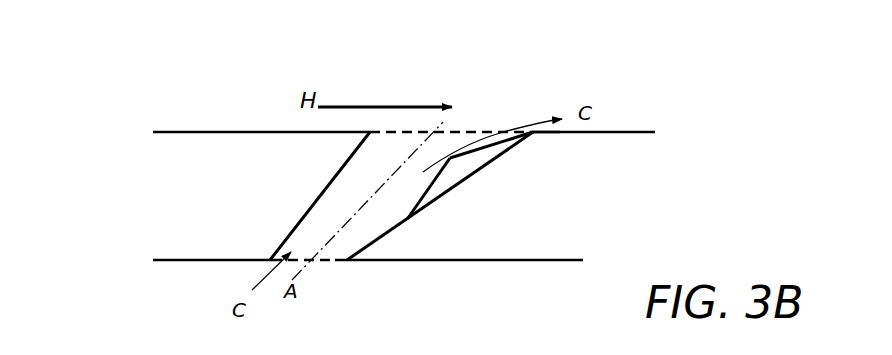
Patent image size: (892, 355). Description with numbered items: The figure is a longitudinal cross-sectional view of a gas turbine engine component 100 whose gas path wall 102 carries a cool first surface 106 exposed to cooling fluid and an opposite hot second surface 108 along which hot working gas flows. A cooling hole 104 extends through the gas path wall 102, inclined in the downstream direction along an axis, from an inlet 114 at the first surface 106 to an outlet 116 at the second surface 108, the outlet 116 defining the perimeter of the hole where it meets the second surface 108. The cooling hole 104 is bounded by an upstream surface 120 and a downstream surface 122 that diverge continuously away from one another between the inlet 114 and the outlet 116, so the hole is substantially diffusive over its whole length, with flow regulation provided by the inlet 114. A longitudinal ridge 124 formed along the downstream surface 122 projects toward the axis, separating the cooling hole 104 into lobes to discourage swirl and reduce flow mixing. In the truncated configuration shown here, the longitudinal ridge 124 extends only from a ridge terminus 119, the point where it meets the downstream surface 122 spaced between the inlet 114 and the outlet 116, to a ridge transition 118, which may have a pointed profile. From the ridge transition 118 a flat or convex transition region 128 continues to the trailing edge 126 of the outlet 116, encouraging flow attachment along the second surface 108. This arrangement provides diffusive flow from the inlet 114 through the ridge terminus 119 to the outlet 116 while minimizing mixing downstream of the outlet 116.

The gas turbine engine component 100 is at (96, 78).
The gas path wall 102 is at (222, 179).
The cooling hole 104 is at (407, 196).
The first surface 106 is at (503, 261).
The second surface 108 is at (245, 131).
The inlet 114 is at (325, 263).
The outlet 116 is at (463, 132).
The ridge transition 118 is at (452, 159).
The ridge terminus 119 is at (408, 218).
The upstream surface 120 is at (325, 184).
The downstream surface 122 is at (387, 233).
The longitudinal ridge 124 is at (428, 192).
The trailing edge 126 is at (540, 135).
The transition region 128 is at (485, 149).